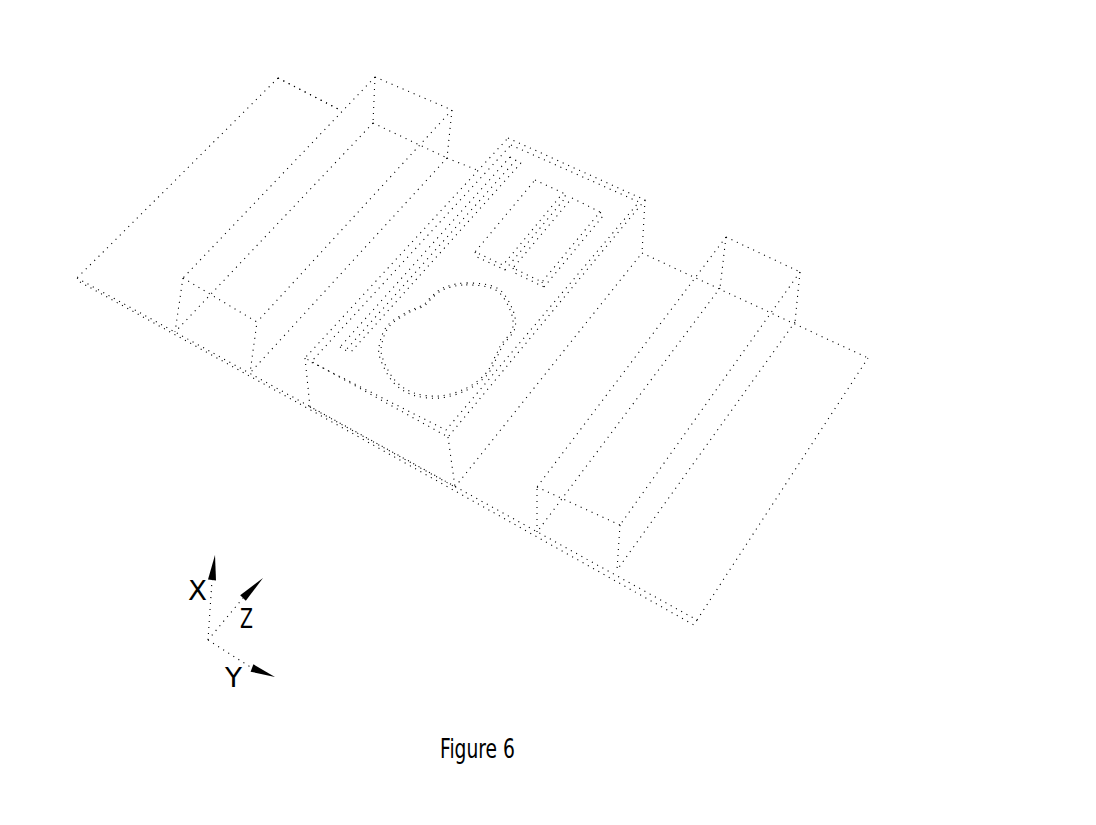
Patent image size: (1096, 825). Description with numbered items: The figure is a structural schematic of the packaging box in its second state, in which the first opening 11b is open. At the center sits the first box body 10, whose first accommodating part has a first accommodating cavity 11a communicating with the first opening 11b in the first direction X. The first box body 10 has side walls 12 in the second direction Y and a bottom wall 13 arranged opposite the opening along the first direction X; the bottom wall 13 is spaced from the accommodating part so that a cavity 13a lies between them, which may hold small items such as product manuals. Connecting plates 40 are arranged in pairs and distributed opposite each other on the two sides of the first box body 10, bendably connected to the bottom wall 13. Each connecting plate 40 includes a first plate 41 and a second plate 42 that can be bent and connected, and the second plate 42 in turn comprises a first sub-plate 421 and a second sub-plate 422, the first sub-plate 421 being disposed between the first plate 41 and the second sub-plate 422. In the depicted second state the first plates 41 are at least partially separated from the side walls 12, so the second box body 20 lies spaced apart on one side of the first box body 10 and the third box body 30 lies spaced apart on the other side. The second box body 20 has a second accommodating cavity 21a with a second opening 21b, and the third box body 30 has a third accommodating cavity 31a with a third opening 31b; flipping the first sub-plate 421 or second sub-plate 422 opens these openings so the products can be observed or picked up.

The first box body 10 is at (372, 503).
The first accommodating cavity 11a is at (527, 158).
The first opening 11b is at (593, 155).
The side wall 12 is at (645, 200).
The bottom wall 13 is at (370, 440).
The cavity 13a is at (653, 250).
The second box body 20 is at (147, 410).
The second accommodating cavity 21a is at (402, 95).
The second opening 21b is at (238, 181).
The third box body 30 is at (643, 660).
The third accommodating cavity 31a is at (763, 250).
The third opening 31b is at (793, 348).
The connecting plate 40 is at (826, 538).
The first plate 41 is at (237, 408).
The second plate 42 is at (48, 340).
The first sub-plate 421 is at (587, 565).
The second sub-plate 422 is at (637, 593).